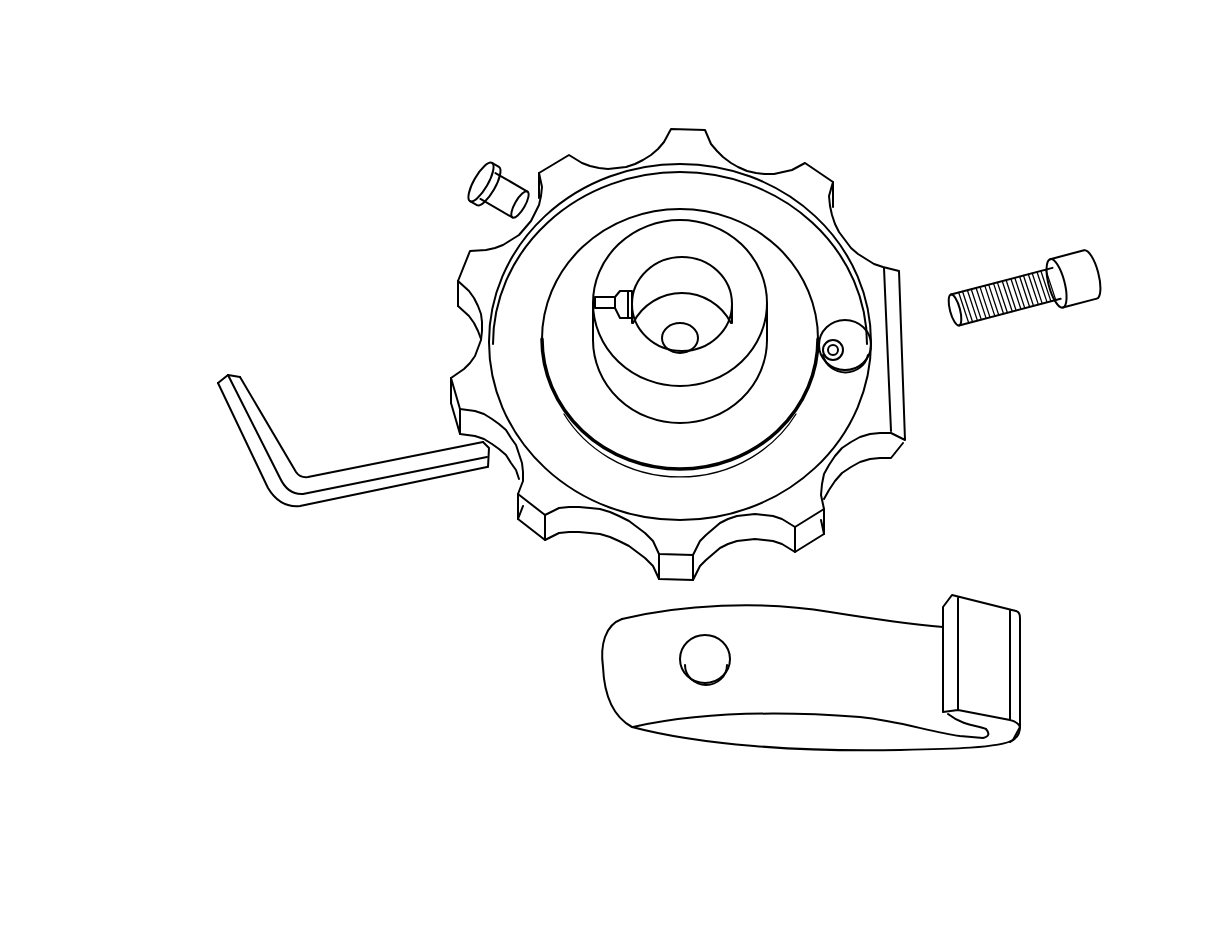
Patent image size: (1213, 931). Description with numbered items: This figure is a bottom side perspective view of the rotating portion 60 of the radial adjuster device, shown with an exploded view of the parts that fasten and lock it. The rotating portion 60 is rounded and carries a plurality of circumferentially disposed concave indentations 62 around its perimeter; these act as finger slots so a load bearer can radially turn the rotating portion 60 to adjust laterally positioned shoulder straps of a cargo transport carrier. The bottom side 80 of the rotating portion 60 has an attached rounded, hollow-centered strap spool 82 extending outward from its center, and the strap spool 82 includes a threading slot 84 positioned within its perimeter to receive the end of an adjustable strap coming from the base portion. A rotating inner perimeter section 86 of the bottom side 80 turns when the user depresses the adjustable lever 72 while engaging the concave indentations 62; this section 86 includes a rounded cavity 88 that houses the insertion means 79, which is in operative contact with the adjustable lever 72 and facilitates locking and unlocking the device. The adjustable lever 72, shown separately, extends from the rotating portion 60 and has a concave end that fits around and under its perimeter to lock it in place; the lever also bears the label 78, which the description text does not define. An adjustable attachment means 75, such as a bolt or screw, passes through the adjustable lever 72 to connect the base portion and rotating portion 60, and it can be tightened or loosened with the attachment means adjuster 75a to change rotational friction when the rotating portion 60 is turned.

The rotating portion 60 is at (464, 84).
The concave indentations 62 is at (627, 163).
The adjustable lever 72 is at (918, 779).
The adjustable attachment means 75 is at (466, 172).
The attachment means adjuster 75a is at (232, 463).
The bracket arm 78 is at (837, 638).
The insertion means 79 is at (840, 343).
The bottom side 80 is at (755, 152).
The strap spool 82 is at (658, 403).
The threading slot 84 is at (596, 302).
The rotating inner perimeter section 86 is at (807, 442).
The rounded cavity 88 is at (858, 366).